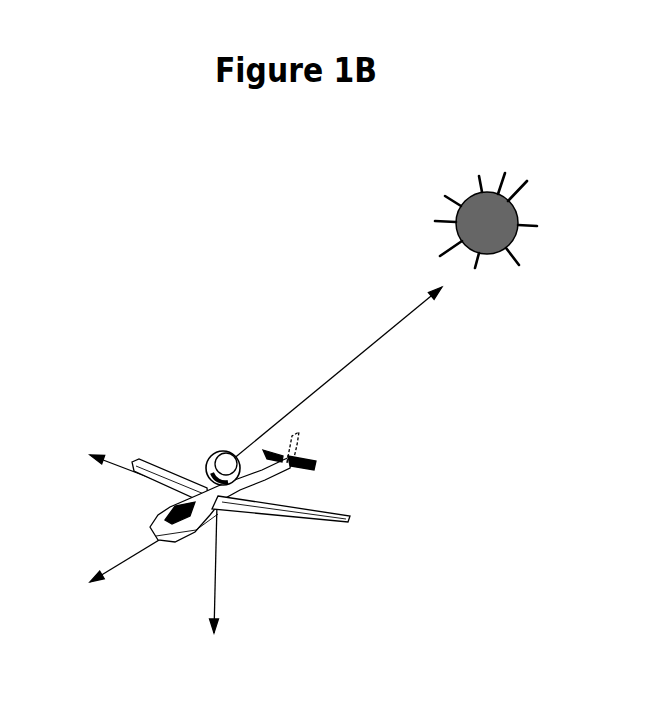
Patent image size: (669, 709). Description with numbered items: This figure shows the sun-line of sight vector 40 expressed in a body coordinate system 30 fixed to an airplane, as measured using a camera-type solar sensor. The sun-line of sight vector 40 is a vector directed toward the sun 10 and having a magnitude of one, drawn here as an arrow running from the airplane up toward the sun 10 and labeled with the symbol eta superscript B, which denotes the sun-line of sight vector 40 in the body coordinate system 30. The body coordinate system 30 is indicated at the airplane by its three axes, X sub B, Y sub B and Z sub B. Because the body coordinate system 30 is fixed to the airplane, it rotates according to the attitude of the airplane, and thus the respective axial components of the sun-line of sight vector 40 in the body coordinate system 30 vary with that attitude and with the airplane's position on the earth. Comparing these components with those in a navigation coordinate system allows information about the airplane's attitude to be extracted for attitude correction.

The sun 10 is at (458, 238).
The body coordinate system 30 is at (175, 558).
The sun-line of sight vector 40 is at (347, 363).